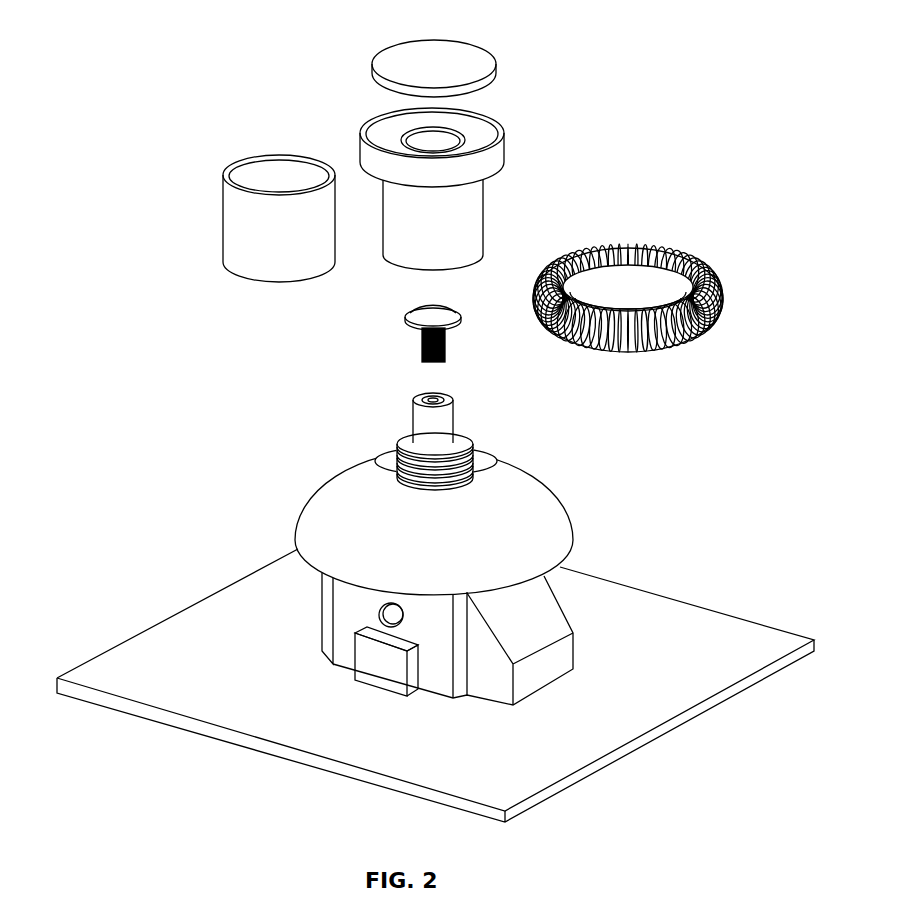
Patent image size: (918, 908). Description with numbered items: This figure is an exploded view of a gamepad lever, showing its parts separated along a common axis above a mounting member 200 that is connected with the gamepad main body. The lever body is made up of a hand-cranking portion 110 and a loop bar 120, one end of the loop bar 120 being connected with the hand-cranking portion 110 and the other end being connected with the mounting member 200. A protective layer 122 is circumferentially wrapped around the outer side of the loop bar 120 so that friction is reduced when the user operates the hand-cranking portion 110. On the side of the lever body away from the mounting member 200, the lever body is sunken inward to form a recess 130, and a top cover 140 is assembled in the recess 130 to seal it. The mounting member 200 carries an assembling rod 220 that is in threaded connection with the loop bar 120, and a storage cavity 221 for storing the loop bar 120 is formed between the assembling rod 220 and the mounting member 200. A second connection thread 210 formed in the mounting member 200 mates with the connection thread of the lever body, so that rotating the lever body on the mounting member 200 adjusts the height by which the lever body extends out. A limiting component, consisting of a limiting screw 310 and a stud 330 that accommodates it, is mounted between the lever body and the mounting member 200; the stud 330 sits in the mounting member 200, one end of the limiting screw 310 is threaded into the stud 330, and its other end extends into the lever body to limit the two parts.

The top cover 140 is at (436, 62).
The recess 130 is at (473, 130).
The hand-cranking portion 110 is at (437, 173).
The loop bar 120 is at (437, 240).
The protective layer 122 is at (280, 232).
The limiting screw 310 is at (430, 315).
The stud 330 is at (433, 420).
The assembling rod 220 is at (413, 437).
The second connection thread 210 is at (386, 452).
The storage cavity 221 is at (500, 457).
The mounting member 200 is at (468, 526).